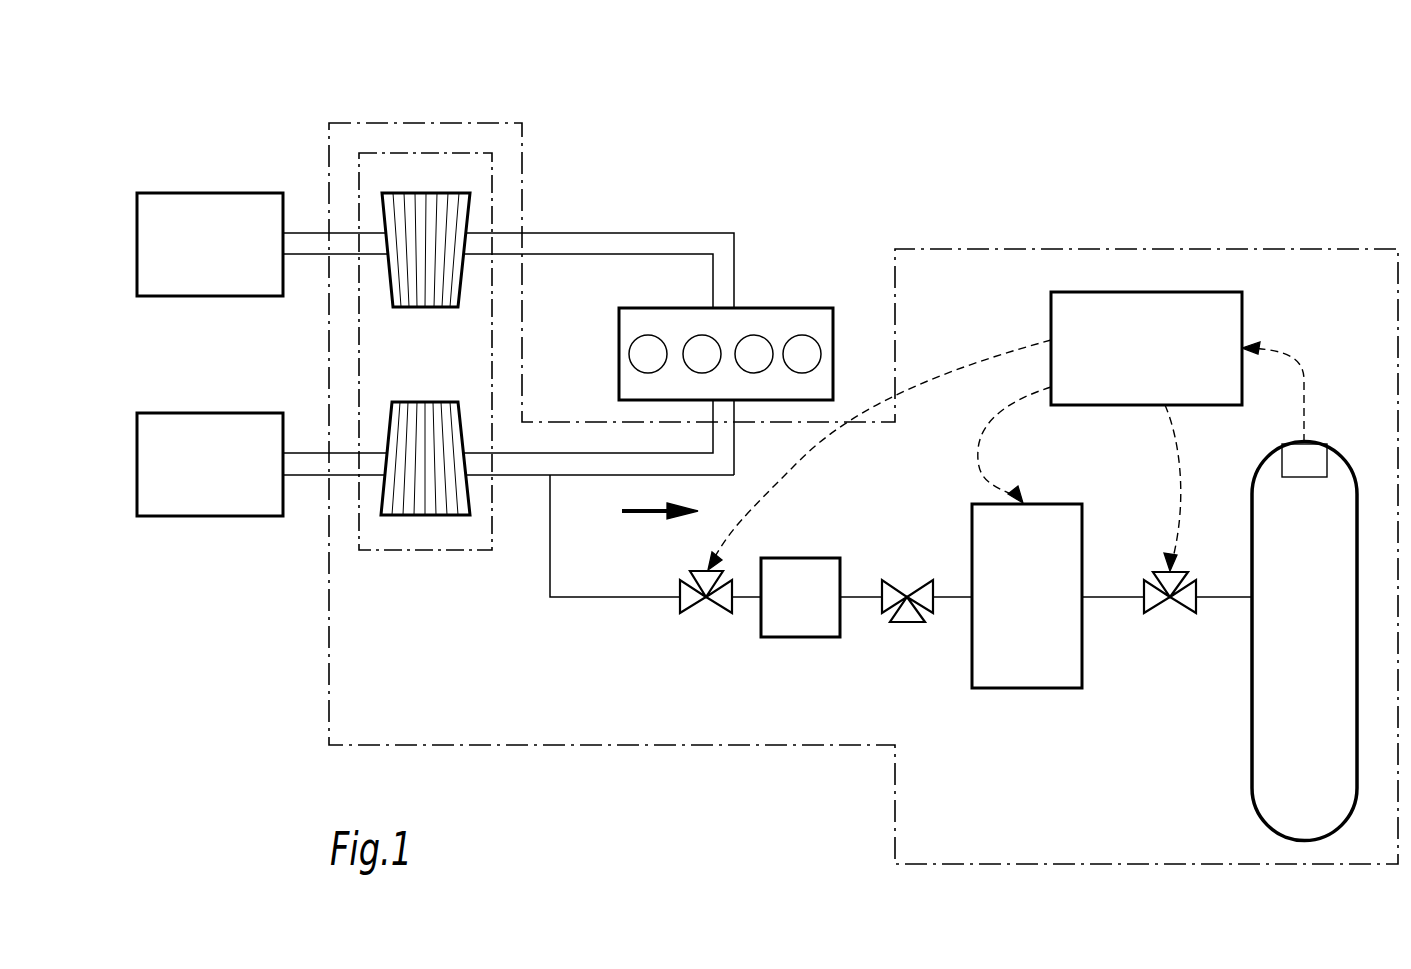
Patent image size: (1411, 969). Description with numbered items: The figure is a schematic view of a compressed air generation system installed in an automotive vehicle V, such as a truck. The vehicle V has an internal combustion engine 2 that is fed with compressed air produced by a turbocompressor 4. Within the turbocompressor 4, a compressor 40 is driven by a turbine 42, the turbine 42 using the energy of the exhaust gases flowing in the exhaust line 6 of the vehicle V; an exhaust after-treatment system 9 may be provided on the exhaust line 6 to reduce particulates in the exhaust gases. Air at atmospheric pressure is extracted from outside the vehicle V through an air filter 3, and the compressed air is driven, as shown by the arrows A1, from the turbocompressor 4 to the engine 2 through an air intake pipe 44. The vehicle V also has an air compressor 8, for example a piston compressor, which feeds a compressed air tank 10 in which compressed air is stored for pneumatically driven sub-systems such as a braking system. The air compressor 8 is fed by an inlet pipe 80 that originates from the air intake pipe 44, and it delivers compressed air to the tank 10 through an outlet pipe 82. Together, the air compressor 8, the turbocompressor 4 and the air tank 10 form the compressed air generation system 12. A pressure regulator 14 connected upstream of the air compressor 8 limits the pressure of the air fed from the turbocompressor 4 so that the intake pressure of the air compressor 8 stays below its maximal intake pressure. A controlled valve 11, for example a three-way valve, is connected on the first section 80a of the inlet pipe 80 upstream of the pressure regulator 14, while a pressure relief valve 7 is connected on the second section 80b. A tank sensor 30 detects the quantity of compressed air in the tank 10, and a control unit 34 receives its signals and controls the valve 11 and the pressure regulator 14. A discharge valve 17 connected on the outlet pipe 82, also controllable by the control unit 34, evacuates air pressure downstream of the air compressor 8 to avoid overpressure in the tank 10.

The internal combustion engine 2 is at (833, 326).
The air filter 3 is at (210, 464).
The turbocompressor 4 is at (438, 150).
The exhaust line 6 is at (562, 243).
The valve 7 is at (910, 623).
The air compressor 8 is at (1027, 596).
The exhaust after-treatment system 9 is at (210, 244).
The compressed air tank 10 is at (1304, 641).
The valve 11 is at (680, 605).
The compressed air generation system 12 is at (1195, 248).
The pressure regulator 14 is at (800, 597).
The discharge valve 17 is at (1190, 603).
The tank sensor 30 is at (1315, 457).
The control unit 34 is at (975, 431).
The compressor 40 is at (425, 493).
The turbine 42 is at (420, 205).
The air intake pipe 44 is at (575, 465).
The inlet pipe 80 is at (552, 645).
The first section 80a is at (588, 597).
The second section 80b is at (852, 597).
The outlet pipe 82 is at (1117, 597).
The automotive vehicle V is at (827, 207).
The arrows A1 is at (660, 525).